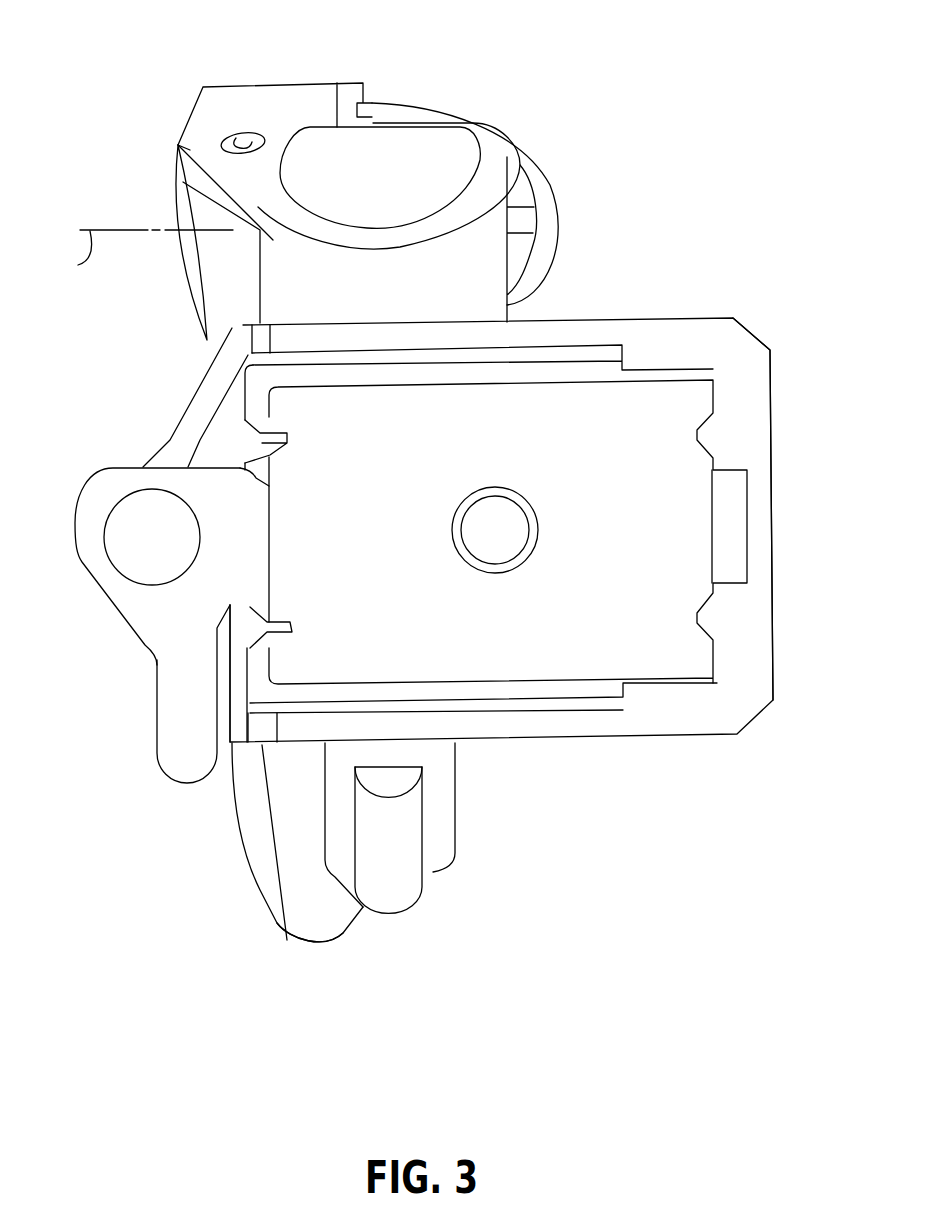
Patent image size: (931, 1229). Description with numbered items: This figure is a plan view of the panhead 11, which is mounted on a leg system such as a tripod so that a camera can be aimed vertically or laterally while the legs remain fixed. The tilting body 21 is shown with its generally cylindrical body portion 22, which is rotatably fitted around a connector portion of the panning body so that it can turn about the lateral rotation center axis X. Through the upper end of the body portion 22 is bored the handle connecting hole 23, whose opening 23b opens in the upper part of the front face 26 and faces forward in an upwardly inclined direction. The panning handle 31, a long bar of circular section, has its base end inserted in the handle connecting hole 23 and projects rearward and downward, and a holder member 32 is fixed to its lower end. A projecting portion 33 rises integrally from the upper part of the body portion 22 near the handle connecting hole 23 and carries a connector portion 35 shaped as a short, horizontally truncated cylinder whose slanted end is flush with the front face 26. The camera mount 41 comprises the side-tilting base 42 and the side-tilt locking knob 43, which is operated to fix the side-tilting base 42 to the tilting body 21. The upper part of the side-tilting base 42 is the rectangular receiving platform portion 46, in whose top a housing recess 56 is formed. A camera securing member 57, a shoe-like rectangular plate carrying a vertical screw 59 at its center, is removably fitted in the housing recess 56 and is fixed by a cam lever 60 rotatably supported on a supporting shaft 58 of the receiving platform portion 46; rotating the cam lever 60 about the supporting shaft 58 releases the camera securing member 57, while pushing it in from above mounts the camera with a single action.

The panhead 11 is at (183, 817).
The tilting body 21 is at (177, 118).
The body portion 22 is at (207, 290).
The handle connecting hole 23 is at (178, 145).
The opening 23b is at (233, 134).
The front face 26 is at (265, 107).
The panning handle 31 is at (253, 885).
The holder member 32 is at (302, 933).
The projecting portion 33 is at (470, 297).
The connector portion 35 is at (473, 247).
The camera mount 41 is at (752, 312).
The side-tilting base 42 is at (720, 712).
The side-tilt locking knob 43 is at (393, 858).
The receiving platform portion 46 is at (773, 377).
The housing recess 56 is at (672, 372).
The camera securing member 57 is at (683, 515).
The supporting shaft 58 is at (133, 547).
The screw 59 is at (495, 552).
The cam lever 60 is at (152, 700).